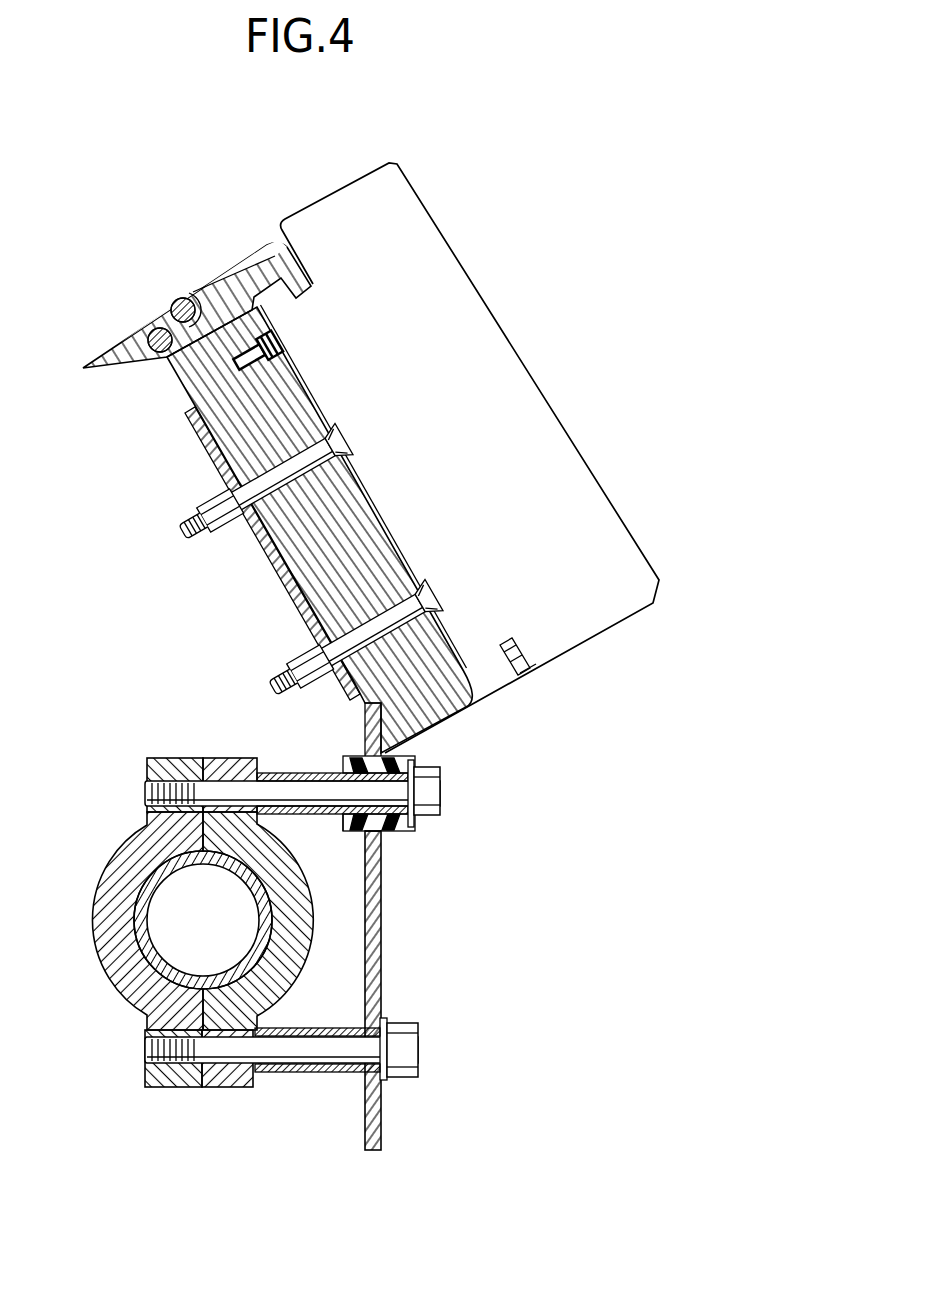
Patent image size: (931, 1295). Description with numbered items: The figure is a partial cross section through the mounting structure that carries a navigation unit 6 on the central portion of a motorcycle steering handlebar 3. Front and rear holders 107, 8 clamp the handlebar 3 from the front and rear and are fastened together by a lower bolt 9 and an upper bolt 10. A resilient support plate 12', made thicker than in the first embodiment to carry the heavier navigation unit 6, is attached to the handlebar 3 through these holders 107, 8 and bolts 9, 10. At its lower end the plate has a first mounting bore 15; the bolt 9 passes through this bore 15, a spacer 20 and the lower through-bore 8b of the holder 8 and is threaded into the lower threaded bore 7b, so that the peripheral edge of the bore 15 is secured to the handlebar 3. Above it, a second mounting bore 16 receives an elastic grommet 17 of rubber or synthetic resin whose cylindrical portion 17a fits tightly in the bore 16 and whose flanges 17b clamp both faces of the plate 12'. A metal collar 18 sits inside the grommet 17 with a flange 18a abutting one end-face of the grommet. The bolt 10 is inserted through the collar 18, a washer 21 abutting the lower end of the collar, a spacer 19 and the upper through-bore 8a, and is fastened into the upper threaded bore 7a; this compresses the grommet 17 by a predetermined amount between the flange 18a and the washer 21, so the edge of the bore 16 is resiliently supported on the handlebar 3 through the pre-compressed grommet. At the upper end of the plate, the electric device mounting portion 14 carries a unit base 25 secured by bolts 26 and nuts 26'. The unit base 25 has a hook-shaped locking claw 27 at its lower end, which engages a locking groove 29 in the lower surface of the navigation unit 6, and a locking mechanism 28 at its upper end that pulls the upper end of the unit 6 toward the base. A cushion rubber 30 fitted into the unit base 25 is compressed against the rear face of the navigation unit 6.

The steering handlebar 3 is at (135, 932).
The navigation unit 6 is at (455, 429).
The upper threaded bore 7a is at (183, 780).
The lower threaded bore 7b is at (172, 1054).
The holder 8 is at (305, 940).
The upper through-bore 8a is at (223, 792).
The lower through-bore 8b is at (230, 1052).
The lower bolt 9 is at (412, 1052).
The upper bolt 10 is at (428, 812).
The resilient support plate 12' is at (438, 990).
The electric device mounting portion 14 is at (306, 596).
The first mounting bore 15 is at (362, 1052).
The second mounting bore 16 is at (368, 834).
The elastic grommet 17 is at (478, 668).
The cylindrical portion 17a is at (398, 746).
The flange 17b is at (350, 760).
The metal collar 18 is at (413, 805).
The flange 18a is at (412, 765).
The spacer 19 is at (290, 812).
The spacer 20 is at (290, 1074).
The washer 21 is at (350, 833).
The unit base 25 is at (340, 550).
The bolt 26 is at (341, 507).
The nut 26' is at (234, 585).
The locking claw 27 is at (503, 640).
The locking mechanism 28 is at (231, 256).
The locking groove 29 is at (523, 672).
The cushion rubber 30 is at (280, 347).
The holder 107 is at (92, 910).